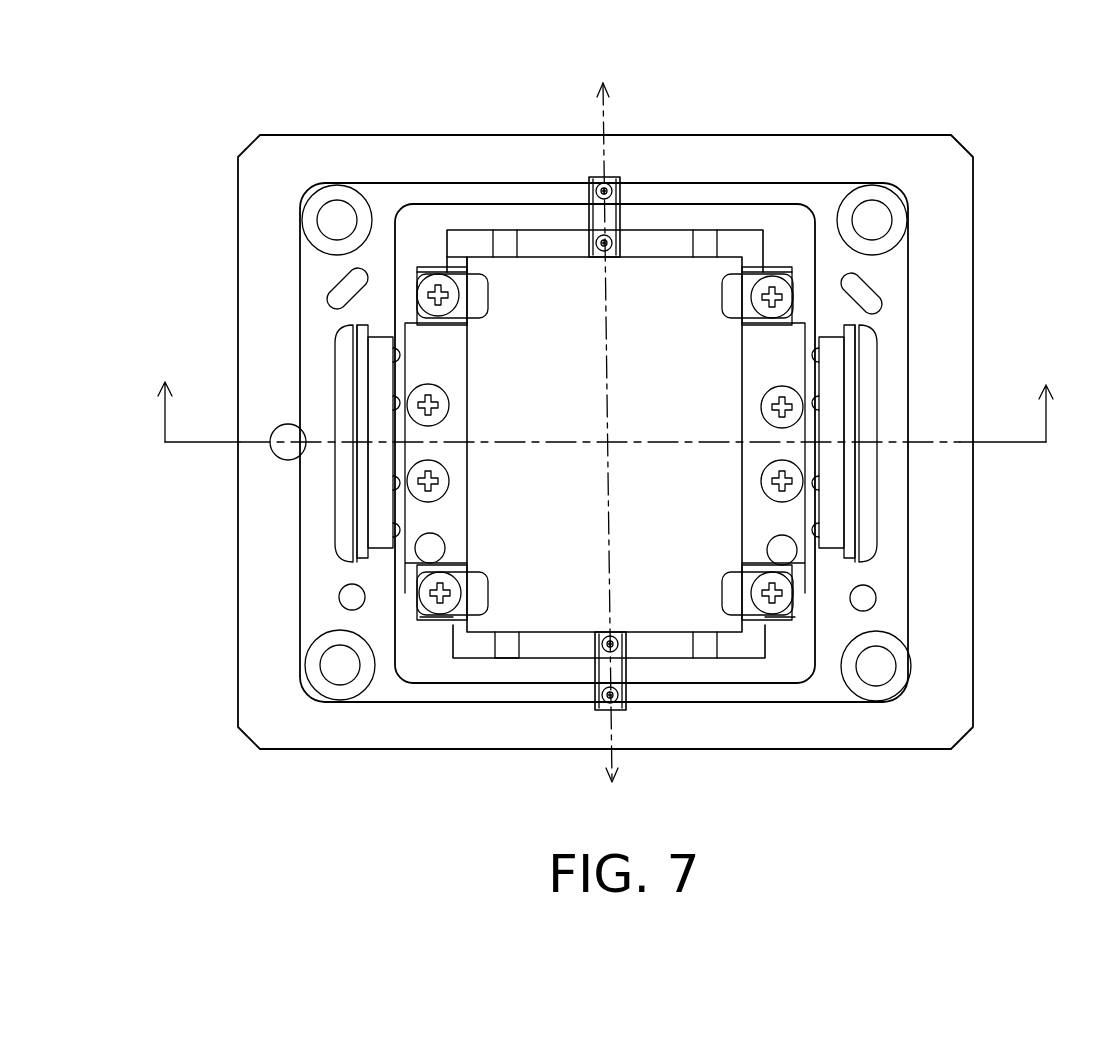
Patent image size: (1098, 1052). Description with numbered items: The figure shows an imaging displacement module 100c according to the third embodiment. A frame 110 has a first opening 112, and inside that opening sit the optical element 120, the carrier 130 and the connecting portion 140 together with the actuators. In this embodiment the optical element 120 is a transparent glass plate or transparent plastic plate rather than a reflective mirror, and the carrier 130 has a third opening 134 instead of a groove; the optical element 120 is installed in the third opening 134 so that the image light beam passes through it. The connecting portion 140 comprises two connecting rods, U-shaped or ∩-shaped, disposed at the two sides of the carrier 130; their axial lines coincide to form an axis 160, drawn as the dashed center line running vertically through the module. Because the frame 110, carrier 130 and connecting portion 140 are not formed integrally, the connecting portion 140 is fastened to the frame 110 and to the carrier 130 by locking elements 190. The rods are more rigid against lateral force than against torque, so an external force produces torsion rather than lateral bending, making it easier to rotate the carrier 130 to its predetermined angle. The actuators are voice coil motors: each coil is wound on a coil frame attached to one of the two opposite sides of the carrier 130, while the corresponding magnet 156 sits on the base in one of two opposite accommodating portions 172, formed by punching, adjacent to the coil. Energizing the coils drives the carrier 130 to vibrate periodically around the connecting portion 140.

The imaging displacement module 100c is at (620, 415).
The frame 110 is at (733, 137).
The first opening 112 is at (733, 238).
The optical element 120 is at (560, 603).
The carrier 130 is at (779, 202).
The third opening 134 is at (480, 252).
The connecting portion 140 is at (624, 220).
The magnet 156 is at (832, 522).
The axis 160 is at (604, 112).
The accommodating portion 172 is at (847, 476).
The locking element 190 is at (598, 391).